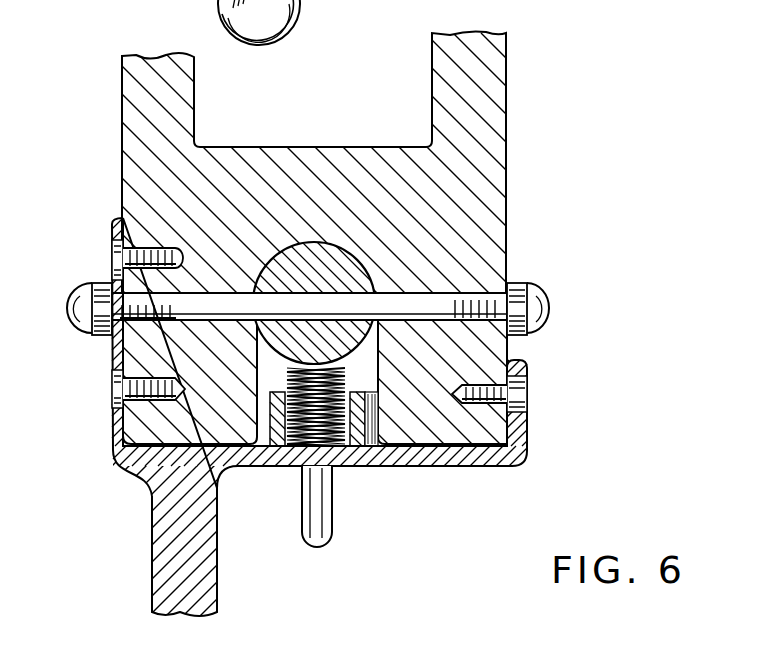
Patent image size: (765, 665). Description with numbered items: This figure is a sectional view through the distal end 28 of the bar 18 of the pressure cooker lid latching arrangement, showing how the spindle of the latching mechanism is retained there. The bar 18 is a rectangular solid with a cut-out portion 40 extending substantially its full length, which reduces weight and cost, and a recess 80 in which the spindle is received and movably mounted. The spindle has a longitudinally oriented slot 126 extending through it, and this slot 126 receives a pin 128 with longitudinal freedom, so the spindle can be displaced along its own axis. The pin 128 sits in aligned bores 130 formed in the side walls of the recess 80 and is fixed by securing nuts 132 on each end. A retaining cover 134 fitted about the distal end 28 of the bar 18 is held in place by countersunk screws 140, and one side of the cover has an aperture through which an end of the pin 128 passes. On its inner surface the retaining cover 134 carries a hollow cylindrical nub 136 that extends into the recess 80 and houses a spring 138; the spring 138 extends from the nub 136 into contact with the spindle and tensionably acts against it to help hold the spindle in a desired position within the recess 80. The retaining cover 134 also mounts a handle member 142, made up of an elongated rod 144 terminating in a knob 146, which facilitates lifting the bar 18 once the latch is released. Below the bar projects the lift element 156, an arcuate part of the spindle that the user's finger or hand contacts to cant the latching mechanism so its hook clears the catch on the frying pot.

The bar 18 is at (140, 80).
The distal end of the bar 28 is at (520, 206).
The cut-out portion 40 is at (432, 83).
The recess 80 is at (262, 377).
The slot 126 is at (305, 300).
The pin 128 is at (428, 322).
The aligned bores 130 is at (233, 300).
The securing nuts 132 is at (78, 298).
The retaining cover 134 is at (435, 467).
The hollow cylindrical nub 136 is at (368, 410).
The spring 138 is at (295, 450).
The countersunk screws 140 is at (117, 252).
The handle member 142 is at (232, 559).
The elongated rod 144 is at (168, 548).
The knob 146 is at (300, 8).
The lift element 156 is at (333, 525).